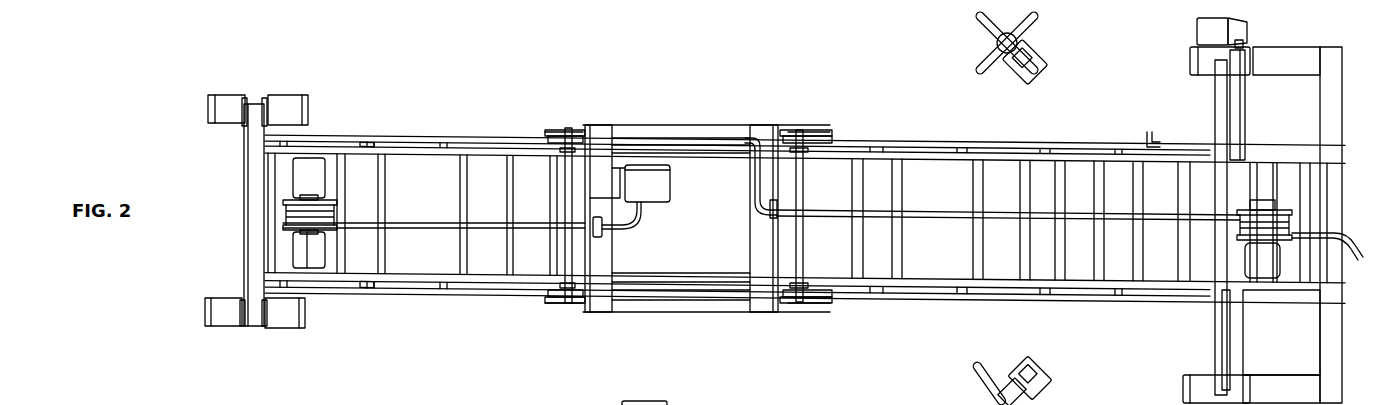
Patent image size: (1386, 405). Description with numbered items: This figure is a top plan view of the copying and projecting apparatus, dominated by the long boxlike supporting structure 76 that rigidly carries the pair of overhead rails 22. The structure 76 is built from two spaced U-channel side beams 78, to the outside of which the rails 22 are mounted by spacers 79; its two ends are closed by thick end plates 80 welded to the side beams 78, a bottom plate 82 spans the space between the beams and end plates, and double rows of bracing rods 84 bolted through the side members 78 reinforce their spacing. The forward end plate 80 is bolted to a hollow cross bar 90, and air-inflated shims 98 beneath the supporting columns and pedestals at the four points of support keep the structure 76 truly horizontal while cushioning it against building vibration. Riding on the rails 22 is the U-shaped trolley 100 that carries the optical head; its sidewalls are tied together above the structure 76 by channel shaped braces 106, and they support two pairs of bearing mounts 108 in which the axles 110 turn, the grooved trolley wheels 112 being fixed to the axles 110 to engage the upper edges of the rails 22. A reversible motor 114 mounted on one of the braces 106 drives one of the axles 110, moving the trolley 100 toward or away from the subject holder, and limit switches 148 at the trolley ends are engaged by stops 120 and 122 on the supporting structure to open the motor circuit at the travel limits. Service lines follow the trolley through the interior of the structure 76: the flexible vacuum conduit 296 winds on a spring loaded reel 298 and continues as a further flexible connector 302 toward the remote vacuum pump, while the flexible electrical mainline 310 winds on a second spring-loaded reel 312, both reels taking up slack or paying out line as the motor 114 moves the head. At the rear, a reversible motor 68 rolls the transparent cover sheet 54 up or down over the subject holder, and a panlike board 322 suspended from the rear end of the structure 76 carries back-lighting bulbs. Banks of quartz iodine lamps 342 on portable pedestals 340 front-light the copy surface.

The overhead rails 22 is at (367, 142).
The transparent cover sheet 54 is at (1213, 343).
The reversible motor 68 is at (1202, 30).
The boxlike supporting structure 76 is at (922, 307).
The U-channel side beams 78 is at (487, 152).
The spacers 79 is at (440, 142).
The end plates 80 is at (1338, 256).
The bottom plate 82 is at (1114, 252).
The bracing rods 84 is at (507, 188).
The cross bar 90 is at (250, 165).
The inflatable shims 98 is at (222, 95).
The trolley 100 is at (648, 308).
The channel shaped braces 106 is at (752, 258).
The bearing mounts 108 is at (575, 128).
The axles 110 is at (563, 240).
The trolley wheels 112 is at (583, 133).
The reversible motor 114 is at (670, 187).
The stop 120 is at (265, 128).
The stop 122 is at (1150, 138).
The limit switches 148 is at (545, 128).
The flexible conduit 296 is at (967, 215).
The spring loaded reel 298 is at (1268, 200).
The flexible connector 302 is at (1323, 235).
The flexible mainline 310 is at (447, 227).
The spring-loaded reel 312 is at (283, 216).
The panlike frame or board 322 is at (1322, 353).
The portable pedestals 340 is at (990, 35).
The quartz iodine lamps 342 is at (1043, 67).